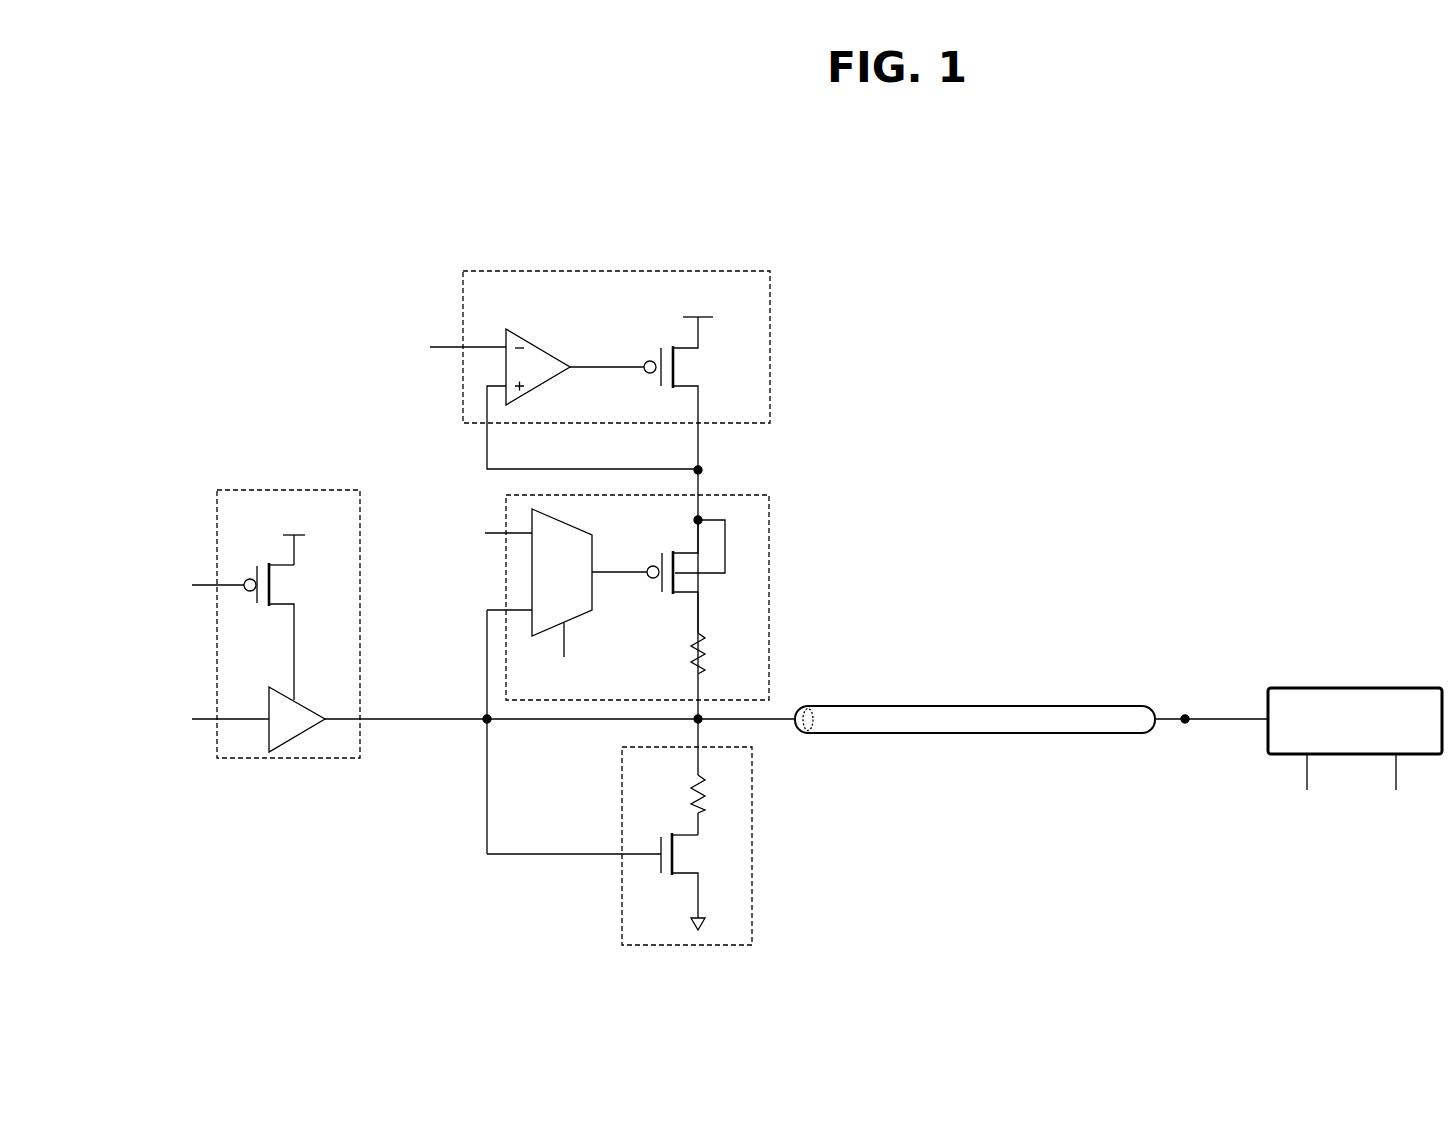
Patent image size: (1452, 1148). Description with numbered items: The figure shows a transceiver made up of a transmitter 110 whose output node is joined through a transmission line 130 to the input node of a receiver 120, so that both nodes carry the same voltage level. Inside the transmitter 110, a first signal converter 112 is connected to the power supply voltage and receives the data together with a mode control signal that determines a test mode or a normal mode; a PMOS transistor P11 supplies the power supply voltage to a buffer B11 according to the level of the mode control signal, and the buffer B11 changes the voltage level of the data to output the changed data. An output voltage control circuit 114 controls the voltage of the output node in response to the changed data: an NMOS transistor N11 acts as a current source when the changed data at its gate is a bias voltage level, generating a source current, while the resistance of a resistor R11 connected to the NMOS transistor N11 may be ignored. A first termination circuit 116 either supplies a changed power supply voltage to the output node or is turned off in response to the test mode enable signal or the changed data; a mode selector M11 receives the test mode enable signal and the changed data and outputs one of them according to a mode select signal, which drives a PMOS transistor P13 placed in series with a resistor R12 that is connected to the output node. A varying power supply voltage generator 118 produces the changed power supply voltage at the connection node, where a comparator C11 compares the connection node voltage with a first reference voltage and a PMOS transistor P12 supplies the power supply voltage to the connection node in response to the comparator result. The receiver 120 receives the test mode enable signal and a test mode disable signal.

The transmitter 110 is at (866, 247).
The first signal converter 112 is at (270, 489).
The output voltage control circuit 114 is at (753, 806).
The first termination circuit 116 is at (770, 537).
The varying power supply voltage generator 118 is at (771, 300).
The receiver 120 is at (1352, 688).
The transmission line 130 is at (917, 706).
The comparator C11 is at (538, 357).
The PMOS transistor P11 is at (284, 631).
The PMOS transistor P12 is at (687, 393).
The PMOS transistor P13 is at (699, 574).
The mode selector M11 is at (580, 569).
The resistor R11 is at (671, 794).
The resistor R12 is at (671, 653).
The NMOS transistor N11 is at (612, 875).
The buffer B11 is at (309, 715).